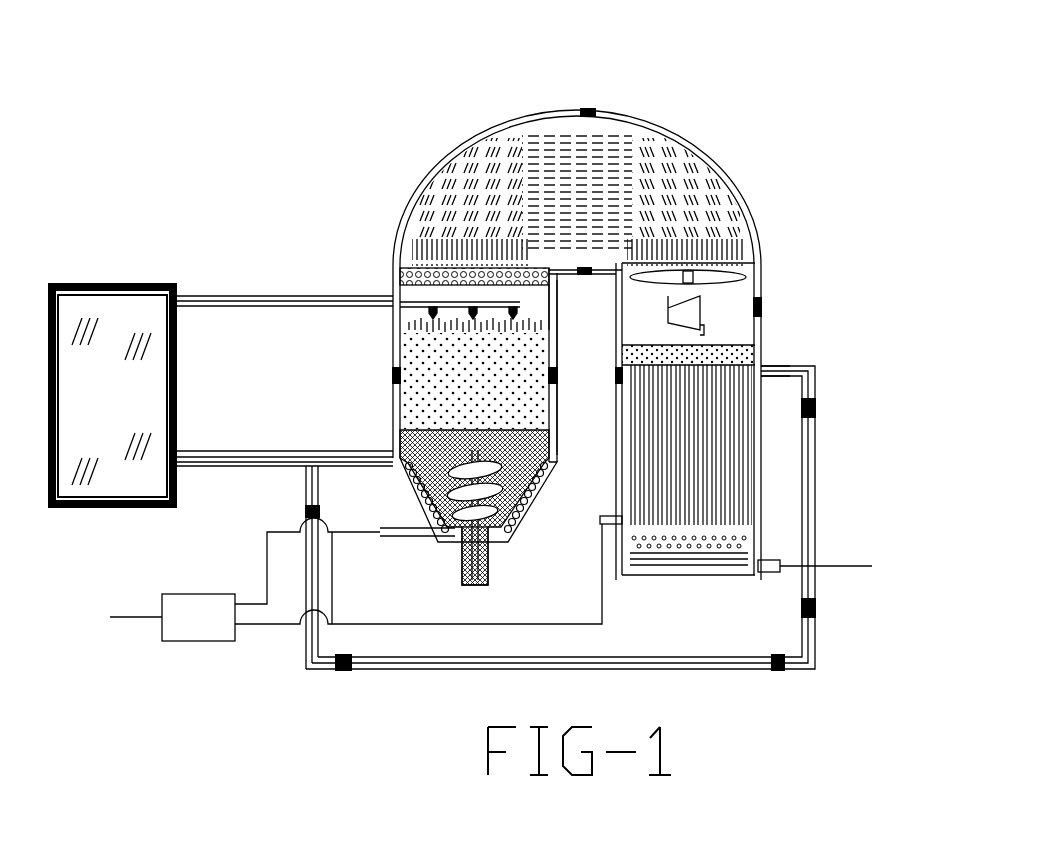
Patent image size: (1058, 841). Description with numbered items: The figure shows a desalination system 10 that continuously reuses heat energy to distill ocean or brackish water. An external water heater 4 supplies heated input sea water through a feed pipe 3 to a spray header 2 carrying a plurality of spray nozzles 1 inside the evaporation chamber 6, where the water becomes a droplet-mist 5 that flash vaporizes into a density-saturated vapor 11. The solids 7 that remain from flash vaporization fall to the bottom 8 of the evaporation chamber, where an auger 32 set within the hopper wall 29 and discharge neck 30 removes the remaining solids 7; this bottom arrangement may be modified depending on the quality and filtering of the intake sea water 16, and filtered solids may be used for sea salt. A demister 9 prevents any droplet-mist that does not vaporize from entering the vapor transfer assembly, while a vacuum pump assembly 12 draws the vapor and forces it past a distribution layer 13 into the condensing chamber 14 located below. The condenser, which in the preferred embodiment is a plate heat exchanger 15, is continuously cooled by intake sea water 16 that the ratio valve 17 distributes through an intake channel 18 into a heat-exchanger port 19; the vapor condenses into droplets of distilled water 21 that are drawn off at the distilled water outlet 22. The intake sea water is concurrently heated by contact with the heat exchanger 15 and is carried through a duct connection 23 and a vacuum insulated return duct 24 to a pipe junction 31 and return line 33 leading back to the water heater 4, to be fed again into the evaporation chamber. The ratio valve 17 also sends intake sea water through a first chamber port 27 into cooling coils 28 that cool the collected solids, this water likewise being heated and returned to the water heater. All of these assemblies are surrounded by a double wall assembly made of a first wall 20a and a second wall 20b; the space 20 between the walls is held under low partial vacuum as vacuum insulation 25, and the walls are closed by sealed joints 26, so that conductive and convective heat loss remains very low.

The spray nozzle 1 is at (425, 345).
The spray header pipe 2 is at (425, 309).
The hot water supply pipe 3 is at (287, 296).
The water heater 4 is at (110, 246).
The water spray 5 is at (472, 330).
The partition wall 6 is at (535, 321).
The remaining solids 7 is at (418, 399).
The bottom of the evaporation chamber 8 is at (400, 439).
The filter layer 9 is at (400, 278).
The apparatus 10 is at (535, 87).
The heating chamber 11 is at (418, 200).
The vacuum pump assembly 12 is at (745, 278).
The distribution layer 13 is at (742, 356).
The partition plate 14 is at (622, 349).
The heat exchanger 15 is at (758, 476).
The intake sea water 16 is at (135, 619).
The ratio valve 17 is at (182, 642).
The conduit 18 is at (528, 624).
The outlet fitting 19 is at (600, 519).
The air channel 20 is at (616, 400).
The outer shell 20a is at (484, 122).
The inner shell 20b is at (518, 112).
The condensate droplets 21 is at (745, 541).
The heating element 22 is at (780, 566).
The duct connection 23 is at (772, 368).
The return duct 24 is at (815, 431).
The insulating wall 25 is at (433, 158).
The joint seals 26 is at (590, 111).
The feed pipe 27 is at (415, 538).
The perforated hopper wall 28 is at (427, 500).
The hopper 29 is at (390, 463).
The discharge neck 30 is at (462, 583).
The pipe junction 31 is at (335, 464).
The auger 32 is at (527, 479).
The return pipe 33 is at (297, 452).